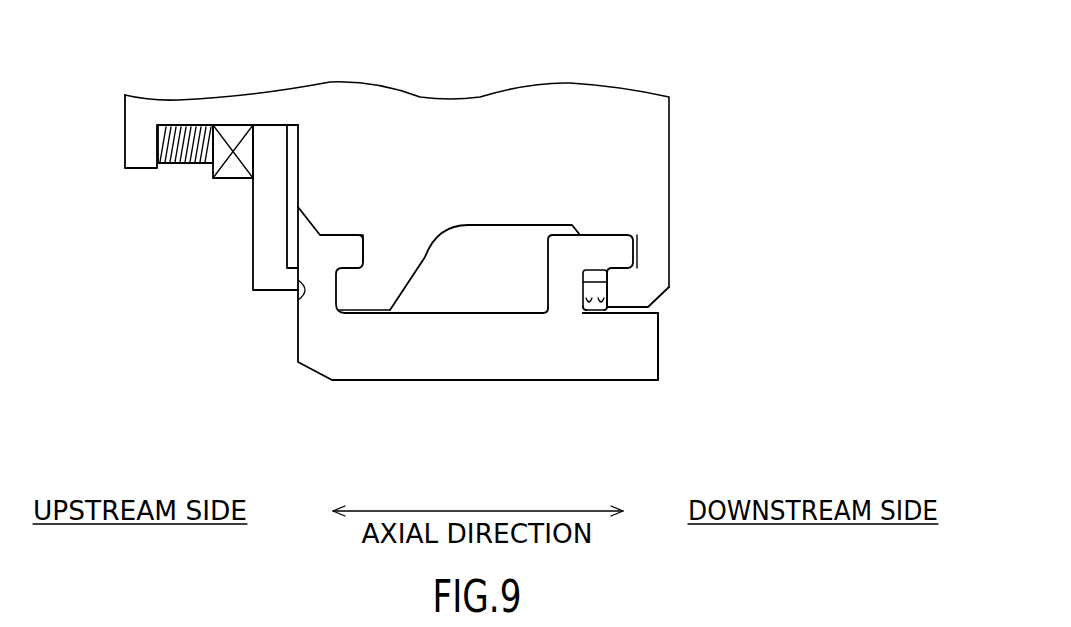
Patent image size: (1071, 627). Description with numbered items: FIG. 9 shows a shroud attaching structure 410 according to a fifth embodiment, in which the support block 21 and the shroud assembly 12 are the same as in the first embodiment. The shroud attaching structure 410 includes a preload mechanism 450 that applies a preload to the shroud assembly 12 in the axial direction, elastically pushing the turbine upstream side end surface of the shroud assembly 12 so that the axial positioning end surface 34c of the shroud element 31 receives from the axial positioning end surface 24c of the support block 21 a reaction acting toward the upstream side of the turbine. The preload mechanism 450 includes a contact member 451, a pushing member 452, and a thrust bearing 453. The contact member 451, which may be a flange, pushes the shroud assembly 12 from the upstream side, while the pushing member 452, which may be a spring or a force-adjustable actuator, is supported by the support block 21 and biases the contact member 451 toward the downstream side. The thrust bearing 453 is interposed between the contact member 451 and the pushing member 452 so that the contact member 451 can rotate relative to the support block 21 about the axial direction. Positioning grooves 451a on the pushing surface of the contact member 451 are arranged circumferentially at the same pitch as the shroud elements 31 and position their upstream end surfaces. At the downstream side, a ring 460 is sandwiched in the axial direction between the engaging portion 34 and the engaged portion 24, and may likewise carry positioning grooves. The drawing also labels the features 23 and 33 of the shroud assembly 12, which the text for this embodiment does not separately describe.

The shroud attaching structure 410 is at (174, 84).
The support block 21 is at (673, 148).
The preload mechanism 450 is at (184, 279).
The pushing member 452 is at (175, 167).
The thrust bearing 453 is at (233, 172).
The contact member 451 is at (251, 268).
The positioning groove 451a is at (297, 301).
The shroud assembly 12 is at (297, 363).
The groove bottom 23 is at (360, 297).
The protrusion 33 is at (348, 245).
The engaging portion 34 is at (622, 255).
The axial positioning end surface 34c is at (583, 312).
The engaged portion 24 is at (641, 298).
The axial positioning end surface 24c is at (600, 312).
The ring 460 is at (596, 310).
The shroud element 31 is at (661, 343).